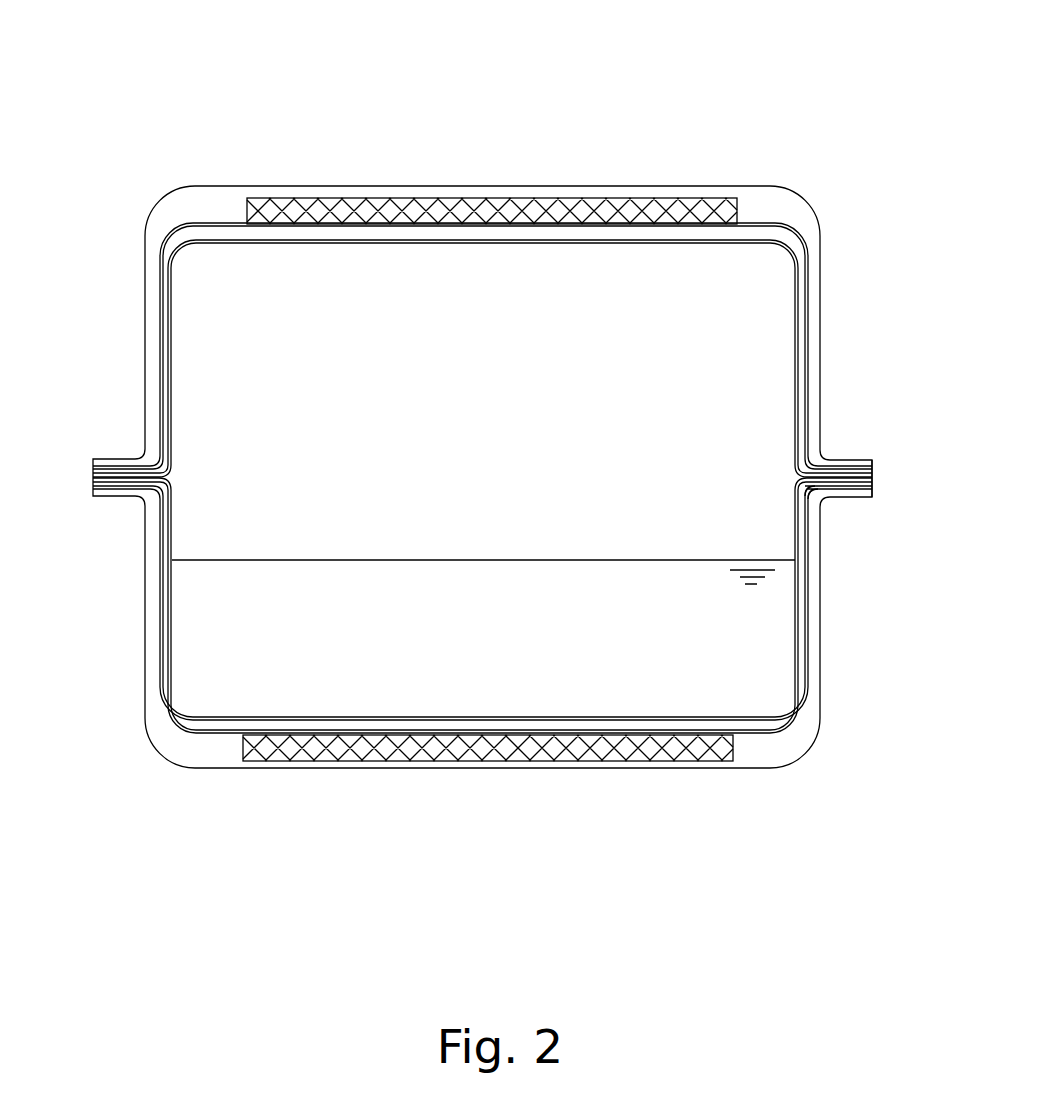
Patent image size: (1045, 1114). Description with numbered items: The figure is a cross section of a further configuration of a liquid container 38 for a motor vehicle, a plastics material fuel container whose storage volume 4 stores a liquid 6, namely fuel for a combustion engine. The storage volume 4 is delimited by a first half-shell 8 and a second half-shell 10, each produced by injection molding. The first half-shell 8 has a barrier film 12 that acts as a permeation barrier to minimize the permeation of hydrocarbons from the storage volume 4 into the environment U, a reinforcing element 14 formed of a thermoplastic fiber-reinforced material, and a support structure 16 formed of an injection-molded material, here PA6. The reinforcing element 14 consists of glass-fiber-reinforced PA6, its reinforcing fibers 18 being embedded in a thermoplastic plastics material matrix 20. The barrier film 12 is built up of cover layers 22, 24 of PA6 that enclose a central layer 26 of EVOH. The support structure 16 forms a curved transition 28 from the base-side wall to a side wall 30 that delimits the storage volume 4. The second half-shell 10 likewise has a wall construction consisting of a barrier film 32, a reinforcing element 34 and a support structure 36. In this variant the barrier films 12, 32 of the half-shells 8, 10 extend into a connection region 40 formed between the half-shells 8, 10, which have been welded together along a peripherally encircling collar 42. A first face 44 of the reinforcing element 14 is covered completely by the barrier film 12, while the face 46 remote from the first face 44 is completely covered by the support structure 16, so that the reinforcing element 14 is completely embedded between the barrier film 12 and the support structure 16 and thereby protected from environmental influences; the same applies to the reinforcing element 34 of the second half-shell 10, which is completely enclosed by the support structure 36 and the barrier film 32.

The storage volume 4 is at (694, 393).
The liquid 6 is at (232, 633).
The first half-shell 8 is at (767, 826).
The second half-shell 10 is at (740, 138).
The barrier film 12 is at (480, 730).
The reinforcing element 14 is at (410, 757).
The support structure 16 is at (225, 755).
The reinforcing fibers 18 is at (360, 757).
The thermoplastic plastics material matrix 20 is at (313, 757).
The cover layer 22 is at (265, 712).
The cover layer 24 is at (160, 713).
The central layer 26 is at (345, 722).
The curved transition 28 is at (820, 747).
The side wall 30 is at (829, 667).
The barrier film 32 is at (796, 243).
The reinforcing element 34 is at (478, 198).
The support structure 36 is at (375, 188).
The liquid container 38 is at (289, 143).
The connection region 40 is at (838, 445).
The peripherally encircling collar 42 is at (873, 482).
The first face 44 is at (630, 735).
The face remote from the first face 46 is at (634, 762).
The environment U is at (690, 40).